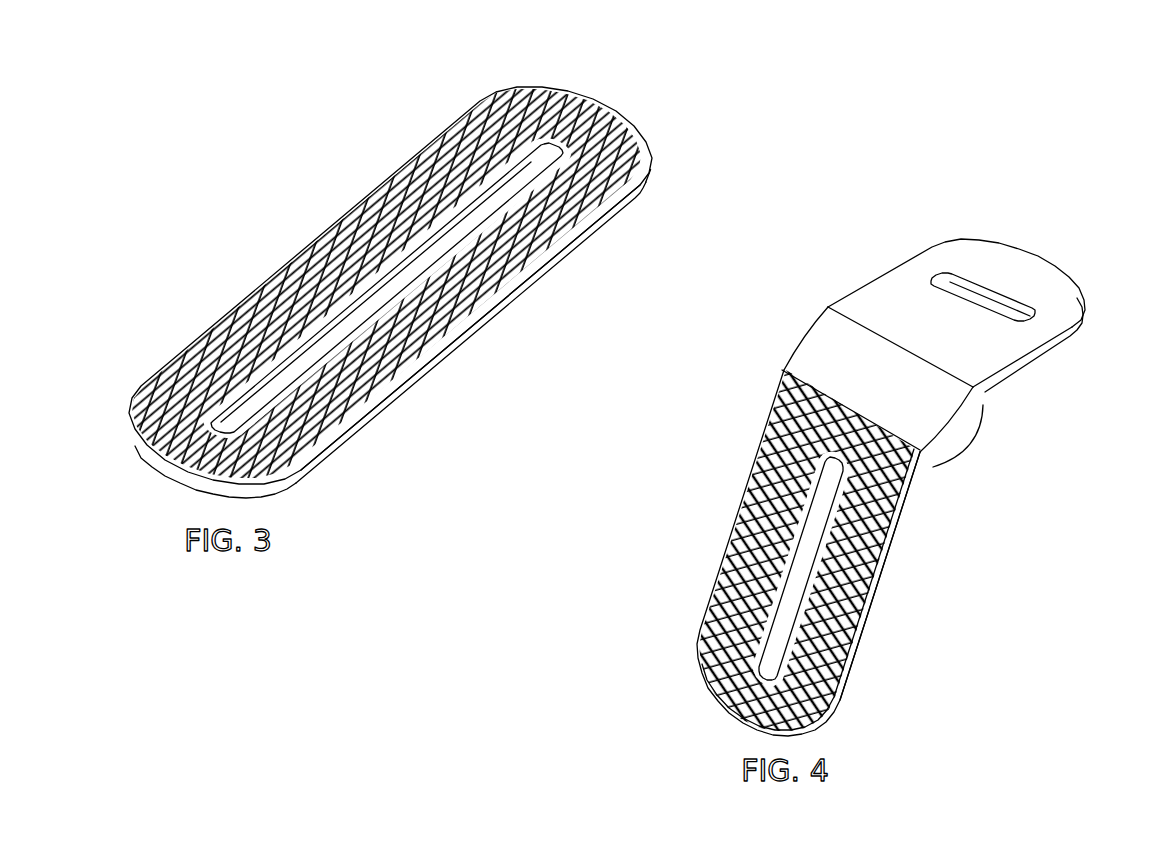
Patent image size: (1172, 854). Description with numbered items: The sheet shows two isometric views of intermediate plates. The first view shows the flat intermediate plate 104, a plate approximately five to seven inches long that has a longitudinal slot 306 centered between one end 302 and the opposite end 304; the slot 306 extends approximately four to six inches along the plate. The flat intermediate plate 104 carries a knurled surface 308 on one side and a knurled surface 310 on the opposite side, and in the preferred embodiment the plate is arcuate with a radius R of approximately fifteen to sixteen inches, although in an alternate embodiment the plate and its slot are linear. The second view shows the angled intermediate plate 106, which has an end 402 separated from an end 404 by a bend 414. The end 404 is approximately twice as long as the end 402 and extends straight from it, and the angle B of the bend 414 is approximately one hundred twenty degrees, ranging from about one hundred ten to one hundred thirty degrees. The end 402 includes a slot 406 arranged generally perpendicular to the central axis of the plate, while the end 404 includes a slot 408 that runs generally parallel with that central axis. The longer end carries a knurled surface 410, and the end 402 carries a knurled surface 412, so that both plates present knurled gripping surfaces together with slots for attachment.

In FIG. 3, the flat intermediate plate 104 is at (392, 266).
In FIG. 3, the end 302 is at (655, 158).
In FIG. 3, the end 304 is at (131, 432).
In FIG. 3, the longitudinal slot 306 is at (534, 142).
In FIG. 3, the knurled surface 308 is at (417, 157).
In FIG. 3, the knurled surface 310 is at (373, 407).
In FIG. 3, the radius R is at (505, 294).
In FIG. 4, the angled intermediate plate 106 is at (891, 467).
In FIG. 4, the end 402 is at (1068, 279).
In FIG. 4, the end 404 is at (706, 590).
In FIG. 4, the slot 406 is at (993, 297).
In FIG. 4, the slot 408 is at (795, 528).
In FIG. 4, the knurled surface 410 is at (854, 650).
In FIG. 4, the knurled surface 412 is at (1022, 376).
In FIG. 4, the bend 414 is at (805, 338).
In FIG. 4, the angle B is at (983, 403).